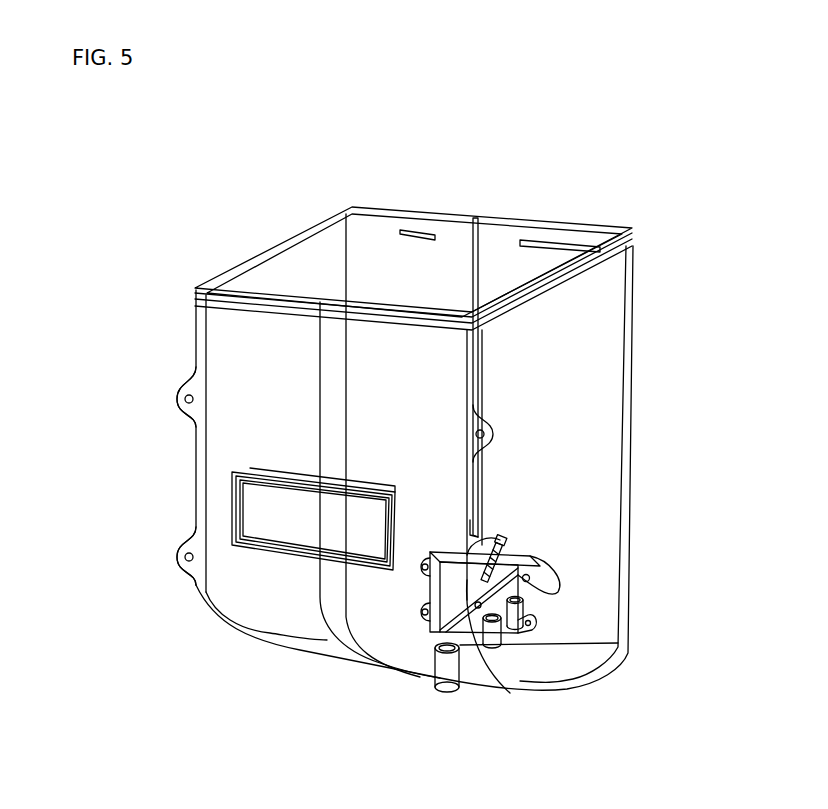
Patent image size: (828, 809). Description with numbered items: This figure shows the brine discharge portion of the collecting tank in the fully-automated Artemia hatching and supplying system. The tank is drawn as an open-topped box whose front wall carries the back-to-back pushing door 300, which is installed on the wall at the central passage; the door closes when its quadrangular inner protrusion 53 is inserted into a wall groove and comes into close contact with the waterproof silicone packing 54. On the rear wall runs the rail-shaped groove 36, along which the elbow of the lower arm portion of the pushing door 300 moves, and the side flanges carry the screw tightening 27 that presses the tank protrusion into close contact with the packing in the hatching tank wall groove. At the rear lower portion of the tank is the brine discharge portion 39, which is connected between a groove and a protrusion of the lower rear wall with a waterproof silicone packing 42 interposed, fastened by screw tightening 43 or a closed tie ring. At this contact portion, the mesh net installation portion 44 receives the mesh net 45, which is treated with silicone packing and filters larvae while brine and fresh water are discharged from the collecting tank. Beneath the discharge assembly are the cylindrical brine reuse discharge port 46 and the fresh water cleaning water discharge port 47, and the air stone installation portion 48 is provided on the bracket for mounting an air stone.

The back-to-back pushing door 300 is at (423, 152).
The rail-shaped groove 36 is at (483, 262).
The screw tightening 27 is at (177, 398).
The inner protrusion 53 is at (252, 547).
The waterproof silicone packing 54 is at (280, 468).
The mesh net installation portion 44 is at (432, 620).
The mesh net 45 is at (458, 597).
The screw tightening 43 is at (540, 563).
The brine discharge portion 39 is at (545, 585).
The air stone installation portion 48 is at (505, 535).
The waterproof silicone packing 42 is at (467, 530).
The brine reuse discharge port 46 is at (490, 655).
The fresh water cleaning water discharge port 47 is at (447, 670).